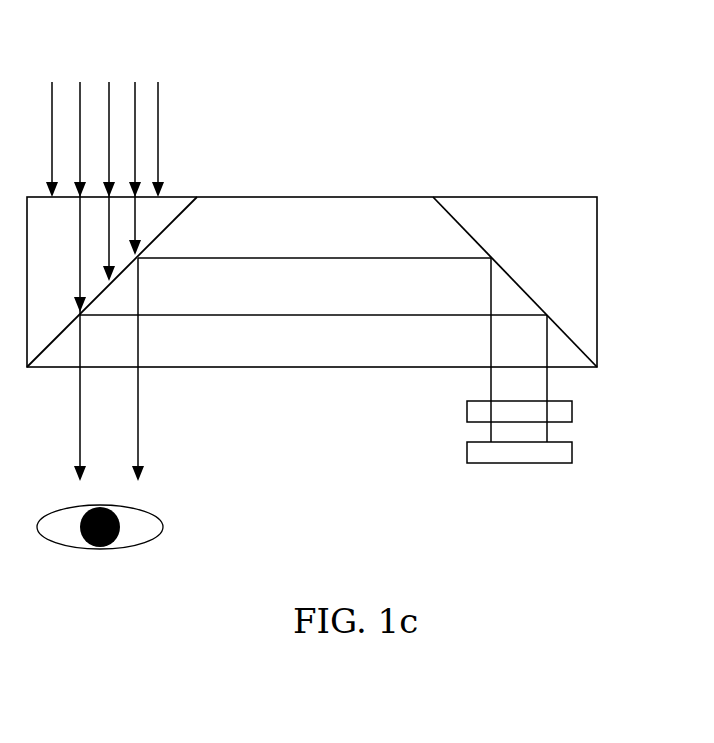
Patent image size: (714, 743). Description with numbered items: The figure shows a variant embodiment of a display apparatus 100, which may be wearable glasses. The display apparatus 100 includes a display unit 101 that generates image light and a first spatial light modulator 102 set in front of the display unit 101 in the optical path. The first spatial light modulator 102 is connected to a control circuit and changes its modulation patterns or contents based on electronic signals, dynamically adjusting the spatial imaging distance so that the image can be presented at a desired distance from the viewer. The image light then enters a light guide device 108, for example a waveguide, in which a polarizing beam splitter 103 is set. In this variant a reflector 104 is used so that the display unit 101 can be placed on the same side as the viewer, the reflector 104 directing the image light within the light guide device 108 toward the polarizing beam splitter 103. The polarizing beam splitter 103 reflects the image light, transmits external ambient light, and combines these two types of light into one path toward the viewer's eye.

The display apparatus 100 is at (245, 55).
The display unit 101 is at (572, 452).
The first spatial light modulator 102 is at (572, 406).
The polarizing beam splitter 103 is at (185, 208).
The reflector 104 is at (503, 268).
The light guide device 108 is at (383, 197).